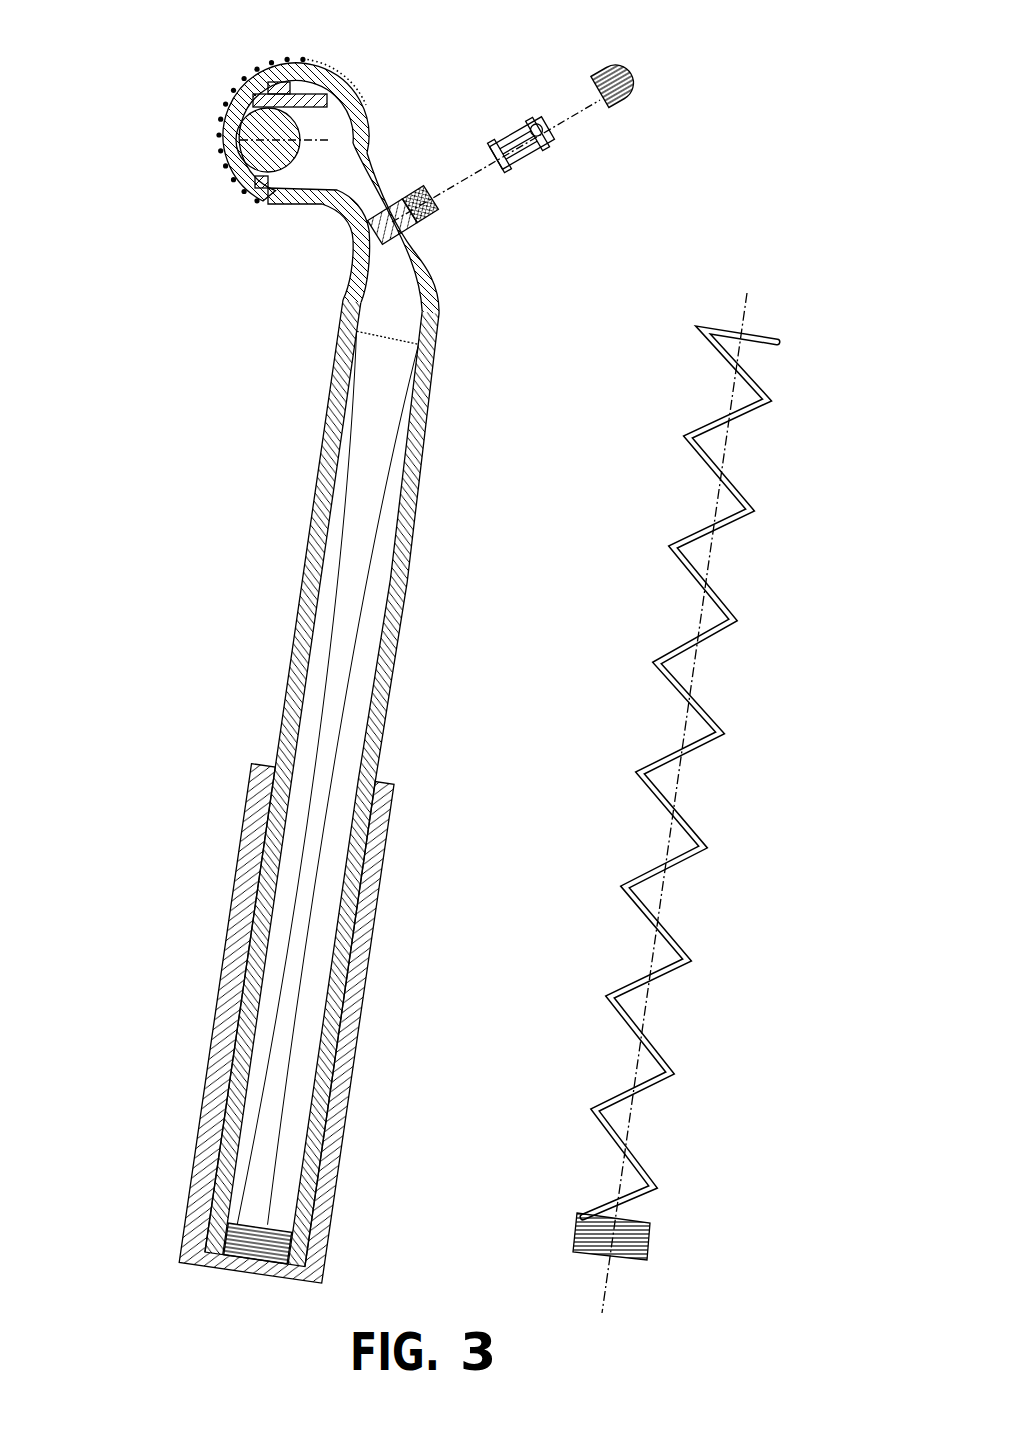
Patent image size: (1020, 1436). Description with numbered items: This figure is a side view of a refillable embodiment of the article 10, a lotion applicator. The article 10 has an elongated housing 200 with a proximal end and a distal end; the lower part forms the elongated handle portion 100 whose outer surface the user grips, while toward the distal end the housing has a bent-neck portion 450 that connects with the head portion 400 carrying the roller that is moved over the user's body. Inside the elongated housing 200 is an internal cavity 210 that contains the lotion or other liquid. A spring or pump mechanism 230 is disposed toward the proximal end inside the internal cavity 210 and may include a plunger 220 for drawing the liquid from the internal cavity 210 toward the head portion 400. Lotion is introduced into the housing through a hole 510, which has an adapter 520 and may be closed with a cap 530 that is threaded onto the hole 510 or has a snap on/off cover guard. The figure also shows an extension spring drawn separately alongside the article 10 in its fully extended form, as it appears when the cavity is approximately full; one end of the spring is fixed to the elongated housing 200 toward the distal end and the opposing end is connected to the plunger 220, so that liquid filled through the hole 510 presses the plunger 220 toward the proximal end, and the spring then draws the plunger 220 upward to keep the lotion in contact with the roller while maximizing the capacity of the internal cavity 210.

The article 10 is at (245, 402).
The elongated handle portion 100 is at (213, 1007).
The elongated housing 200 is at (293, 614).
The internal cavity 210 is at (312, 727).
The plunger 220 is at (260, 1216).
The spring or pump mechanism 230 is at (187, 1227).
The head portion 400 is at (367, 58).
The bent-neck portion 450 is at (335, 263).
The hole 510 is at (411, 178).
The adapter 520 is at (504, 115).
The cap 530 is at (619, 97).